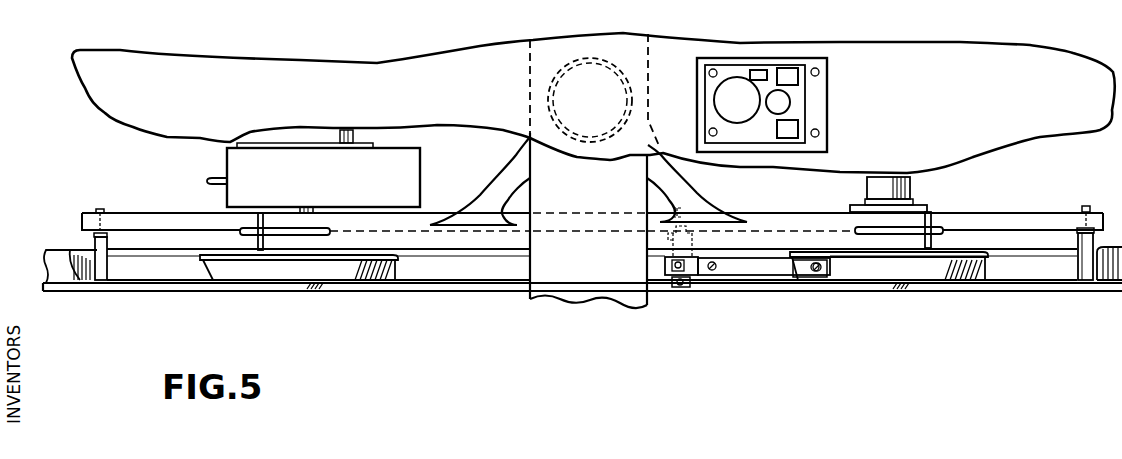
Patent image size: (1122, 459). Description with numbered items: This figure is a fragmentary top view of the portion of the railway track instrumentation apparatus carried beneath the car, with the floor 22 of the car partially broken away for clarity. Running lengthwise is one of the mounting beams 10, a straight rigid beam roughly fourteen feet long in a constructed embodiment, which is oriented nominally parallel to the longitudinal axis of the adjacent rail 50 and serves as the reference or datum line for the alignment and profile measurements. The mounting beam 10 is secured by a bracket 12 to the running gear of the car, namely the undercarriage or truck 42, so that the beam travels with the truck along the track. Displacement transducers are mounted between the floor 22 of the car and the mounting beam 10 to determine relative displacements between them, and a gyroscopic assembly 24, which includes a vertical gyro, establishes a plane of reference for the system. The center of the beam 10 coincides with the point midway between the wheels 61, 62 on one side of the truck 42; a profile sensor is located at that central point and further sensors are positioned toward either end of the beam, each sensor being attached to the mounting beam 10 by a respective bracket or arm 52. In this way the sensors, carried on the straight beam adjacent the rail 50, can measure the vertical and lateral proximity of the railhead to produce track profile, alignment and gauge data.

The mounting beam 10 is at (173, 228).
The bracket 12 is at (930, 213).
The floor 22 is at (938, 132).
The gyroscopic assembly 24 is at (725, 105).
The truck 42 is at (805, 222).
The rail 50 is at (1121, 293).
The bracket 52 is at (100, 282).
The wheel 61 is at (930, 272).
The wheel 62 is at (245, 276).